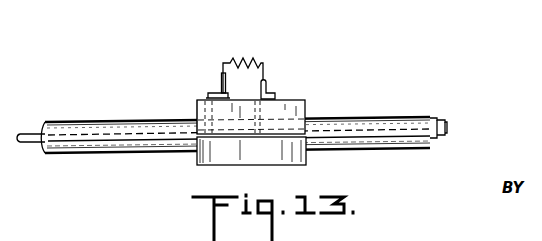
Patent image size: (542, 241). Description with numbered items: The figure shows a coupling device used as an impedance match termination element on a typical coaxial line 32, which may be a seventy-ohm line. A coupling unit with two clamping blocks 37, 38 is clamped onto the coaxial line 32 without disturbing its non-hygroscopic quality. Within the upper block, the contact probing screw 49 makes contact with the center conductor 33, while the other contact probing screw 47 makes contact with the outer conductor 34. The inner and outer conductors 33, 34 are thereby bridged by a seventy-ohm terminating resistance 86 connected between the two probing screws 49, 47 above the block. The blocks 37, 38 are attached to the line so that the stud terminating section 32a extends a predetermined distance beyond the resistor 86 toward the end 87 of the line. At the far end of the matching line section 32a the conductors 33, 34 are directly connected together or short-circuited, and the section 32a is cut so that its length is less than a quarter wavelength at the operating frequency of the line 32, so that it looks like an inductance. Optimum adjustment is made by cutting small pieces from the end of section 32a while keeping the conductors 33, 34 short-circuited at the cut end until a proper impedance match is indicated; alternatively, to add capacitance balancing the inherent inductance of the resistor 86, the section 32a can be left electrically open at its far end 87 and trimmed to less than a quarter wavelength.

The coaxial line 32 is at (73, 120).
The stud terminating section 32a is at (375, 88).
The inner conductor 33 is at (435, 142).
The outer conductor 34 is at (436, 121).
The upper housing block 37 is at (198, 99).
The lower clamp block 38 is at (197, 154).
The contact probing screw 47 is at (276, 95).
The contact probing screw 49 is at (197, 108).
The terminating resistance 86 is at (248, 58).
The end of the line 87 is at (405, 116).